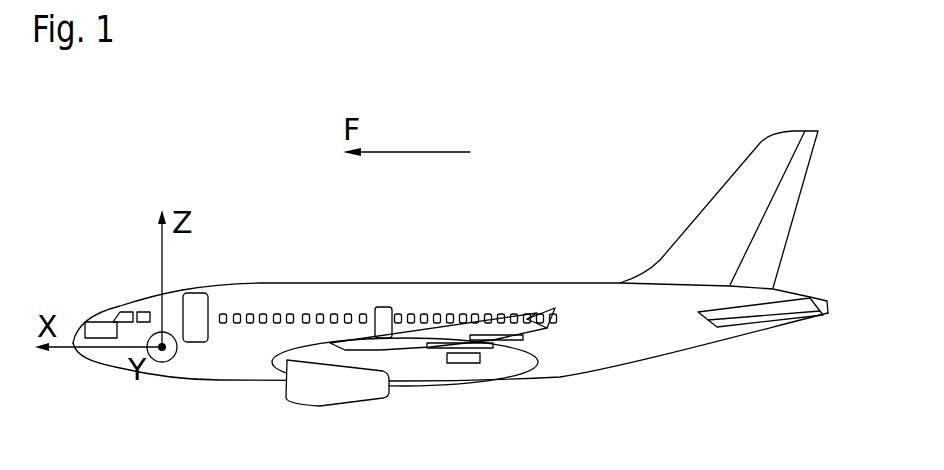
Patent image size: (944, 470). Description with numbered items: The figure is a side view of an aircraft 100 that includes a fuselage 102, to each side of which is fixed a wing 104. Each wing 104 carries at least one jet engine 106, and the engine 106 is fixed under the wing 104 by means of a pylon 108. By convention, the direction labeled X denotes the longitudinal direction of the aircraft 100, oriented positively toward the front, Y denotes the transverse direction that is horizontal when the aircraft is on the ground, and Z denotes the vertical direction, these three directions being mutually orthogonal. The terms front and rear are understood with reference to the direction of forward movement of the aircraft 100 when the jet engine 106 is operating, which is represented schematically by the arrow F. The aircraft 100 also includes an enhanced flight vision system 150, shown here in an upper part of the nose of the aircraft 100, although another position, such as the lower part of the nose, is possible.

The aircraft 100 is at (309, 218).
The fuselage 102 is at (343, 293).
The wing 104 is at (448, 340).
The jet engine 106 is at (335, 388).
The pylon 108 is at (417, 362).
The enhanced flight vision system 150 is at (100, 330).